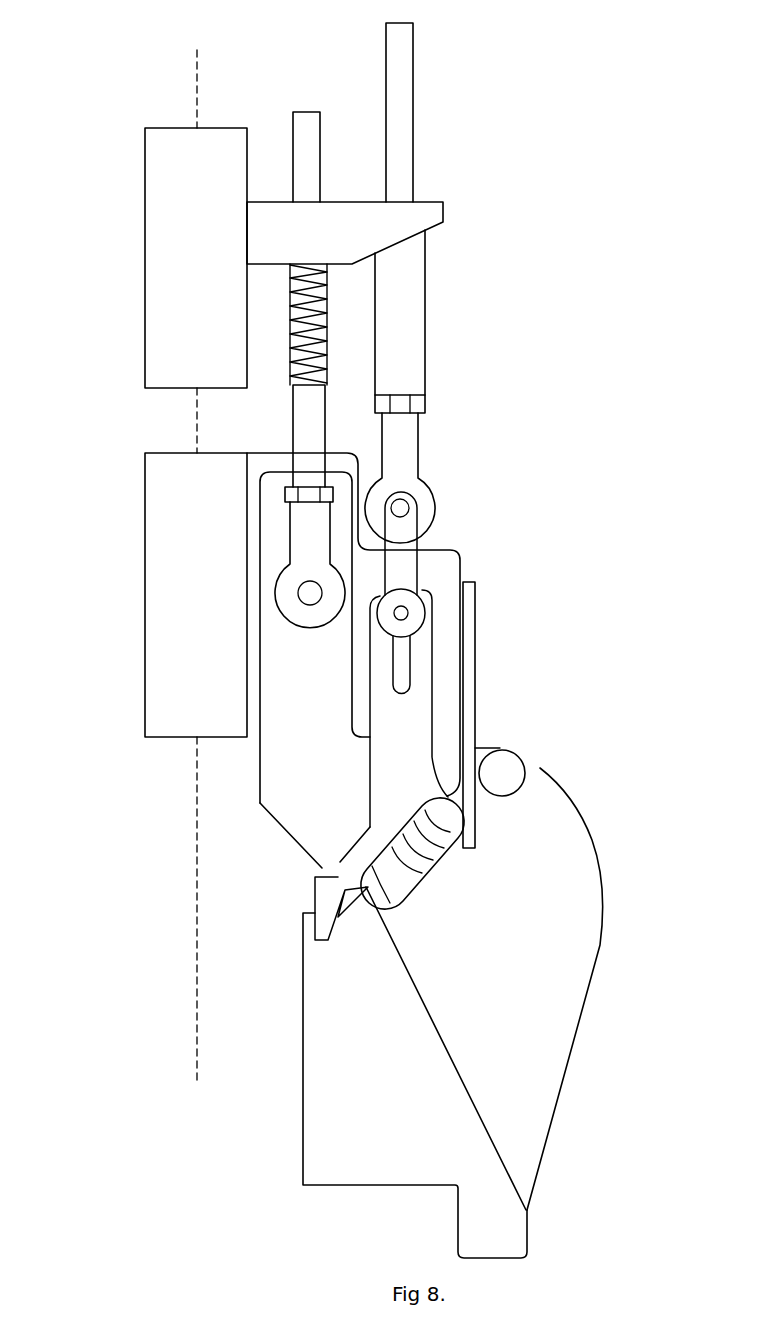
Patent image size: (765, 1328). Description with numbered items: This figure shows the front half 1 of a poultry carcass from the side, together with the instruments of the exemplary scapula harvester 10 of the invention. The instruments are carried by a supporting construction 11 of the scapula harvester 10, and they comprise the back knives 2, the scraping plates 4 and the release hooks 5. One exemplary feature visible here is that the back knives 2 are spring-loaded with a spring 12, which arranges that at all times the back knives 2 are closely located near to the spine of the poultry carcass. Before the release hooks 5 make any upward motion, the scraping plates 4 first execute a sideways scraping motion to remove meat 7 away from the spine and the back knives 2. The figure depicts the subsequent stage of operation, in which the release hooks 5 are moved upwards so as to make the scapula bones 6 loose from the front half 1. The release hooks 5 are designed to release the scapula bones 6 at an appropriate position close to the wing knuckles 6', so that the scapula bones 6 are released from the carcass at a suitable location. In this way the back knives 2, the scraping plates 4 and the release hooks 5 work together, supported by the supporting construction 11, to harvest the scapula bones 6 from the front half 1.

The front half 1 is at (562, 853).
The back knife 2 is at (313, 752).
The scraping plate 4 is at (338, 877).
The release hook 5 is at (480, 632).
The scapula bone 6 is at (530, 874).
The wing knuckle 6' is at (575, 734).
The meat 7 is at (401, 882).
The scapula harvester 10 is at (567, 425).
The supporting construction 11 is at (192, 338).
The spring 12 is at (335, 320).